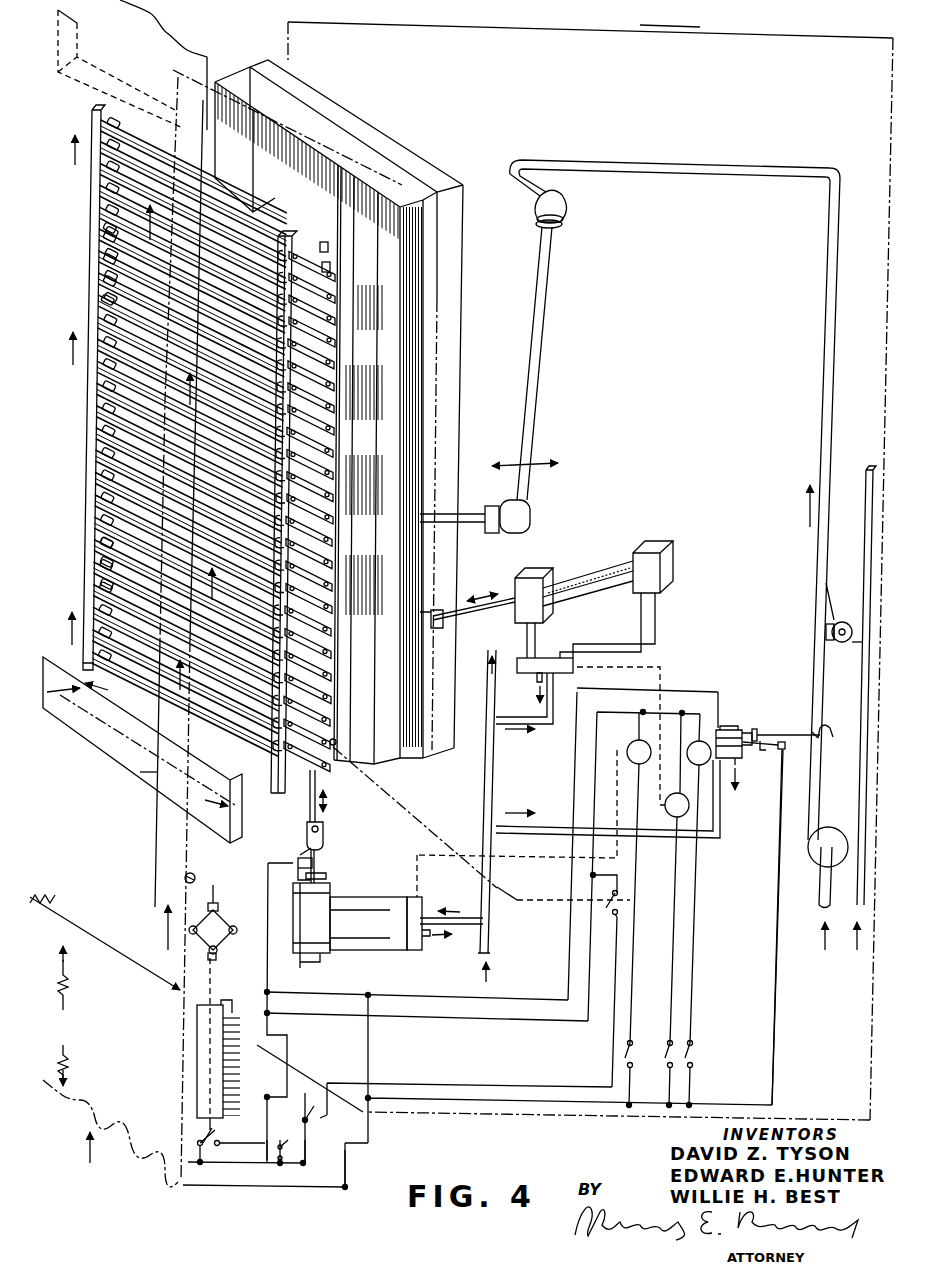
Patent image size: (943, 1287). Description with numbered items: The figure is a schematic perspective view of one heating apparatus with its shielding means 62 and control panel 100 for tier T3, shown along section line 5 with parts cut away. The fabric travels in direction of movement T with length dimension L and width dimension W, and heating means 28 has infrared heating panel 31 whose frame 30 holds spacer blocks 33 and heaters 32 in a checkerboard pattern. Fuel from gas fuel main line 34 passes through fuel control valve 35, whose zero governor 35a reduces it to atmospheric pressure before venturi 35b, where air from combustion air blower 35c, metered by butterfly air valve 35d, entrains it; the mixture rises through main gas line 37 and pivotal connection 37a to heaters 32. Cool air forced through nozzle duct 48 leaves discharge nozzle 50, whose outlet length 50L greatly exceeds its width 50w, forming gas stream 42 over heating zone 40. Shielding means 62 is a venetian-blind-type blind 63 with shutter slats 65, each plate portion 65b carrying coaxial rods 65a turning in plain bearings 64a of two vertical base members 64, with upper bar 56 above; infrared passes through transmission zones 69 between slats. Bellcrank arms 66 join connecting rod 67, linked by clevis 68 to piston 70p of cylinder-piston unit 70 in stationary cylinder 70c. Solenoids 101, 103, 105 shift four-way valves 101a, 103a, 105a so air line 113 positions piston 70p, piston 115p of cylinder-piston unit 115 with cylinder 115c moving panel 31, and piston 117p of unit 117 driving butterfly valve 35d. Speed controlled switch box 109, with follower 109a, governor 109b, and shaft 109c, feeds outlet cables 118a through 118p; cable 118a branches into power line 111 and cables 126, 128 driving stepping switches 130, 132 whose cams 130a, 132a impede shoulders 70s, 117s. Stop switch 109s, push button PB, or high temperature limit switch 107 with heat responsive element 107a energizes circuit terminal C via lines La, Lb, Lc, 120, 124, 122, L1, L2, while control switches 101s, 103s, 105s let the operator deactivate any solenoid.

The section line 5 is at (160, 58).
The heating means 28 is at (379, 409).
The frame 30 is at (356, 409).
The infrared heating panel 31 is at (373, 181).
The heaters 32 is at (333, 152).
The spacer blocks 33 is at (250, 115).
The gas fuel main line 34 is at (857, 908).
The fuel control valve 35 is at (822, 622).
The zero governor 35a is at (825, 581).
The venturi 35b is at (826, 633).
The combustion air blower 35c is at (816, 852).
The butterfly air valve 35d is at (835, 742).
The main gas line 37 is at (828, 283).
The pivotal connection 37a is at (565, 203).
The heating zone 40 is at (166, 436).
The gas stream 42 is at (112, 378).
The nozzle duct 48 is at (100, 748).
The discharge nozzle 50 is at (78, 672).
The length of nozzle outlet 50L is at (150, 770).
The width of nozzle outlet 50w is at (75, 698).
The upper bar 56 is at (90, 102).
The shielding means 62 is at (82, 218).
The venetian-blind-type blind 63 is at (105, 231).
The base members 64 is at (92, 183).
The plain bearing 64a is at (105, 255).
The shutter slats 65 is at (98, 292).
The coaxial rods 65a is at (105, 276).
The plate portion 65b is at (98, 540).
The bellcrank arm 66 is at (412, 409).
The connecting rod 67 is at (308, 803).
The clevis 68 is at (312, 866).
The infrared transmission zones 69 is at (105, 580).
The cylinder-piston unit 70 is at (322, 886).
The cylinder 70c is at (328, 931).
The piston 70p is at (320, 872).
The shoulder 70s is at (323, 835).
The control panel 100 is at (545, 22).
The valve actuating solenoid 101 is at (633, 746).
The solenoid controlled four-way valve 101a is at (410, 952).
The solenoid control switch 101s is at (633, 1040).
The valve actuating solenoid 103 is at (670, 818).
The solenoid controlled four-way valve 103a is at (550, 658).
The solenoid control switch 103s is at (673, 1040).
The valve actuating solenoid 105 is at (700, 736).
The solenoid controlled four-way valve 105a is at (736, 766).
The solenoid control switch 105s is at (695, 1052).
The high temperature limit switch 107 is at (620, 900).
The heat responsive element 107a is at (337, 746).
The speed controlled switch box 109 is at (200, 1043).
The follower 109a is at (192, 873).
The speed governor mechanism 109b is at (225, 915).
The speed control shaft 109c is at (233, 968).
The stop switch 109s is at (200, 1135).
The power line 111 is at (272, 1013).
The air line 113 is at (496, 776).
The cylinder-piston unit 115 is at (565, 580).
The cylinder 115c is at (623, 556).
The piston 115p is at (503, 603).
The solenoid valve 117 is at (718, 725).
The piston 117p is at (735, 722).
The shoulder 117s is at (765, 733).
The outlet cable 118a is at (245, 1004).
The outlet cable 118p is at (218, 1142).
The line 120 is at (460, 1040).
The line 122 is at (370, 1138).
The line 124 is at (292, 1062).
The cable 126 is at (278, 961).
The cable 128 is at (292, 992).
The stepping switch 130 is at (298, 860).
The cam 130a is at (310, 840).
The stepping switch 132 is at (783, 752).
The cam 132a is at (762, 752).
The circuit terminal C is at (640, 712).
The width dimension W is at (105, 942).
The length dimension L is at (62, 1016).
The direction of movement T is at (88, 1159).
The line La is at (268, 1115).
The line Lb is at (317, 1154).
The line Lc is at (347, 1170).
The line L1 is at (240, 1165).
The line L2 is at (262, 1190).
The emergency stop push button PB is at (279, 1146).
The tier T3 is at (640, 25).